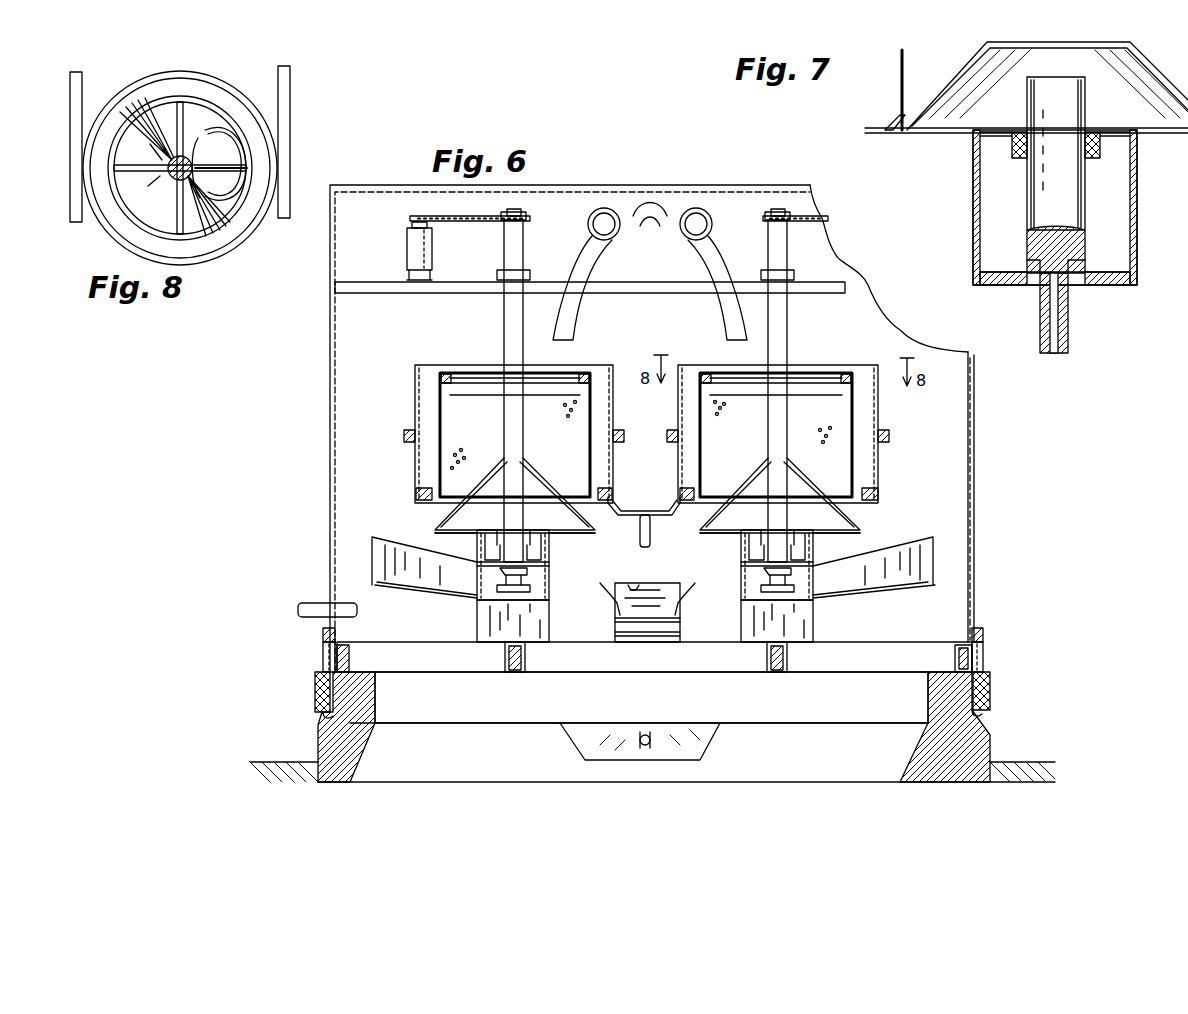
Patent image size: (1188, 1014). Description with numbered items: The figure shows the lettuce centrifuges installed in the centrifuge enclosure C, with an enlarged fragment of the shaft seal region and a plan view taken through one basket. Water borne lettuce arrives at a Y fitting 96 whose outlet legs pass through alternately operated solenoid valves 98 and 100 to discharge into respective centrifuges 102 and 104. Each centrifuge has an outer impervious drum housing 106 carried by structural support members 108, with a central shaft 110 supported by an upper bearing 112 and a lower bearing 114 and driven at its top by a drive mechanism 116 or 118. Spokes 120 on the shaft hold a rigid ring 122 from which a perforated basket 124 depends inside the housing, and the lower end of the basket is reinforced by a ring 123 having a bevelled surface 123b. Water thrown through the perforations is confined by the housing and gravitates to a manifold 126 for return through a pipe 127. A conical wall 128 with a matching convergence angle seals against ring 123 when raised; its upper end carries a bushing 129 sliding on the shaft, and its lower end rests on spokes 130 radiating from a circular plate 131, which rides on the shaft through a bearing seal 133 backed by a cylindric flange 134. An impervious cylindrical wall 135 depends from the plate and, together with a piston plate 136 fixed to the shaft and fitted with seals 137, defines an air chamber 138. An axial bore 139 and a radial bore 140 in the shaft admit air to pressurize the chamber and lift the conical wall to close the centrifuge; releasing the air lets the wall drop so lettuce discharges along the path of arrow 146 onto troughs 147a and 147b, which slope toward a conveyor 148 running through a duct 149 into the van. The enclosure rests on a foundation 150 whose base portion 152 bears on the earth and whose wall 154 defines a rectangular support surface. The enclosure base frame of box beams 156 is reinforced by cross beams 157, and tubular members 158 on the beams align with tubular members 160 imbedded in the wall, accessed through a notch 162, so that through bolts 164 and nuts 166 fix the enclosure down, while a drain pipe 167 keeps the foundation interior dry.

In FIG. 6, the Y fitting 96 is at (650, 200).
In FIG. 6, the solenoid valve 98 is at (614, 240).
In FIG. 6, the solenoid valve 100 is at (686, 240).
In FIG. 6, the centrifuge 102 is at (404, 448).
In FIG. 6, the centrifuge 104 is at (896, 413).
In FIG. 6, the drum housing 106 is at (414, 380).
In FIG. 8, the drum housing 106 is at (256, 90).
In FIG. 6, the structural support members 108 is at (409, 431).
In FIG. 8, the structural support members 108 is at (68, 114).
In FIG. 6, the shaft 110 is at (503, 322).
In FIG. 7, the shaft 110 is at (1056, 84).
In FIG. 8, the shaft 110 is at (171, 176).
In FIG. 6, the upper bearing 112 is at (498, 275).
In FIG. 6, the lower bearing 114 is at (645, 621).
In FIG. 6, the drive mechanism 116 is at (522, 216).
In FIG. 6, the drive mechanism 118 is at (768, 216).
In FIG. 6, the spokes 120 is at (548, 376).
In FIG. 8, the spokes 120 is at (176, 213).
In FIG. 6, the rigid ring 122 is at (437, 372).
In FIG. 8, the rigid ring 122 is at (236, 212).
In FIG. 6, the ring 123 is at (428, 490).
In FIG. 7, the ring 123 is at (888, 123).
In FIG. 6, the bevelled surface 123b is at (600, 497).
In FIG. 6, the perforated basket 124 is at (645, 402).
In FIG. 7, the perforated basket 124 is at (900, 112).
In FIG. 6, the manifold 126 is at (662, 516).
In FIG. 6, the pipe 127 is at (650, 545).
In FIG. 6, the conical wall 128 is at (530, 465).
In FIG. 7, the conical wall 128 is at (1150, 62).
In FIG. 8, the conical wall 128 is at (140, 112).
In FIG. 6, the bushing 129 is at (502, 458).
In FIG. 8, the bushing 129 is at (166, 164).
In FIG. 6, the spokes 130 is at (478, 533).
In FIG. 7, the spokes 130 is at (942, 134).
In FIG. 8, the spokes 130 is at (230, 168).
In FIG. 6, the circular plate 131 is at (534, 532).
In FIG. 7, the circular plate 131 is at (1012, 132).
In FIG. 8, the circular plate 131 is at (198, 144).
In FIG. 7, the bearing seal 133 is at (1094, 146).
In FIG. 7, the cylindric flange 134 is at (1020, 146).
In FIG. 6, the cylindrical wall 135 is at (549, 572).
In FIG. 7, the cylindrical wall 135 is at (1137, 220).
In FIG. 6, the piston plate 136 is at (480, 580).
In FIG. 7, the piston plate 136 is at (1000, 284).
In FIG. 7, the seals 137 is at (980, 275).
In FIG. 6, the air chamber 138 is at (549, 551).
In FIG. 7, the air chamber 138 is at (1074, 236).
In FIG. 7, the axial bore 139 is at (1060, 338).
In FIG. 7, the radial bore 140 is at (1032, 258).
In FIG. 6, the discharge path arrow 146 is at (438, 538).
In FIG. 6, the trough 147a is at (414, 588).
In FIG. 6, the trough 147b is at (874, 588).
In FIG. 6, the conveyor 148 is at (655, 605).
In FIG. 6, the duct 149 is at (632, 584).
In FIG. 6, the foundation 150 is at (996, 735).
In FIG. 6, the base portion 152 is at (686, 752).
In FIG. 6, the wall 154 is at (376, 690).
In FIG. 6, the box beams 156 is at (350, 657).
In FIG. 6, the cross beams 157 is at (524, 670).
In FIG. 6, the tubular members 158 is at (322, 648).
In FIG. 6, the tubular members 160 is at (314, 690).
In FIG. 6, the notch 162 is at (320, 725).
In FIG. 6, the through bolts 164 is at (320, 714).
In FIG. 6, the nuts 166 is at (322, 632).
In FIG. 6, the drain pipe 167 is at (645, 734).
In FIG. 6, the centrifuge enclosure C is at (704, 186).